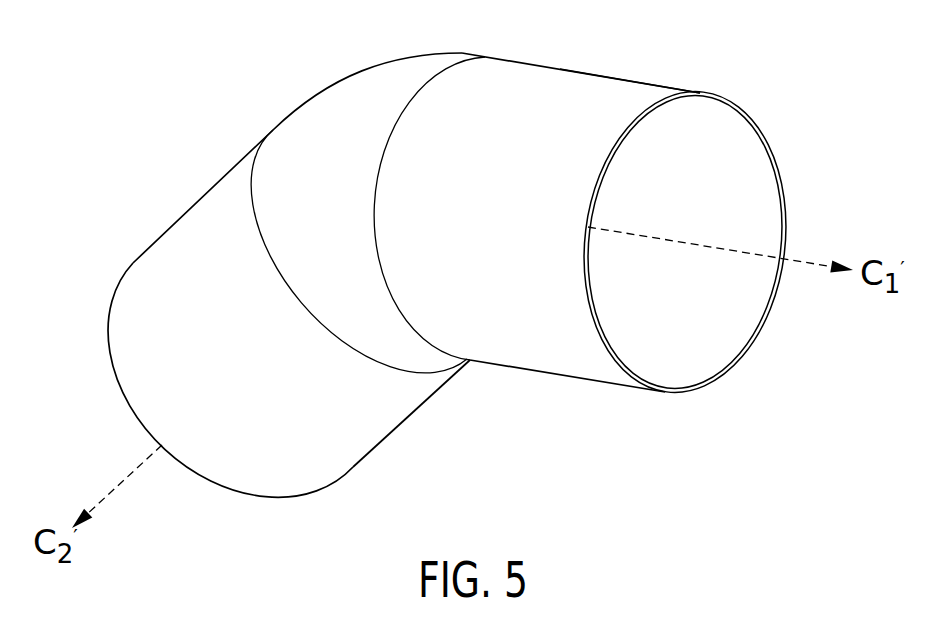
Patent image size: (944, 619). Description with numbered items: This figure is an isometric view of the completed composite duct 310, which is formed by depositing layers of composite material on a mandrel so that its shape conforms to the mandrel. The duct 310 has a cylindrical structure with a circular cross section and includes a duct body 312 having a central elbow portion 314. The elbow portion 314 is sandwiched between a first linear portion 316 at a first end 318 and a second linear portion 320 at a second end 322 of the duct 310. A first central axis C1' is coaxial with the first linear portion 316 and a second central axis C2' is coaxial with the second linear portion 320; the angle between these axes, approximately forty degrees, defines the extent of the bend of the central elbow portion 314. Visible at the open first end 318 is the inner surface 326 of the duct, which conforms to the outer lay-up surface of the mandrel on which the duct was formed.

The duct 310 is at (517, 92).
The duct body 312 is at (435, 83).
The central elbow portion 314 is at (335, 95).
The first linear portion 316 is at (590, 107).
The first end 318 is at (723, 98).
The second linear portion 320 is at (148, 268).
The second end 322 is at (112, 357).
The inner surface 326 is at (720, 337).